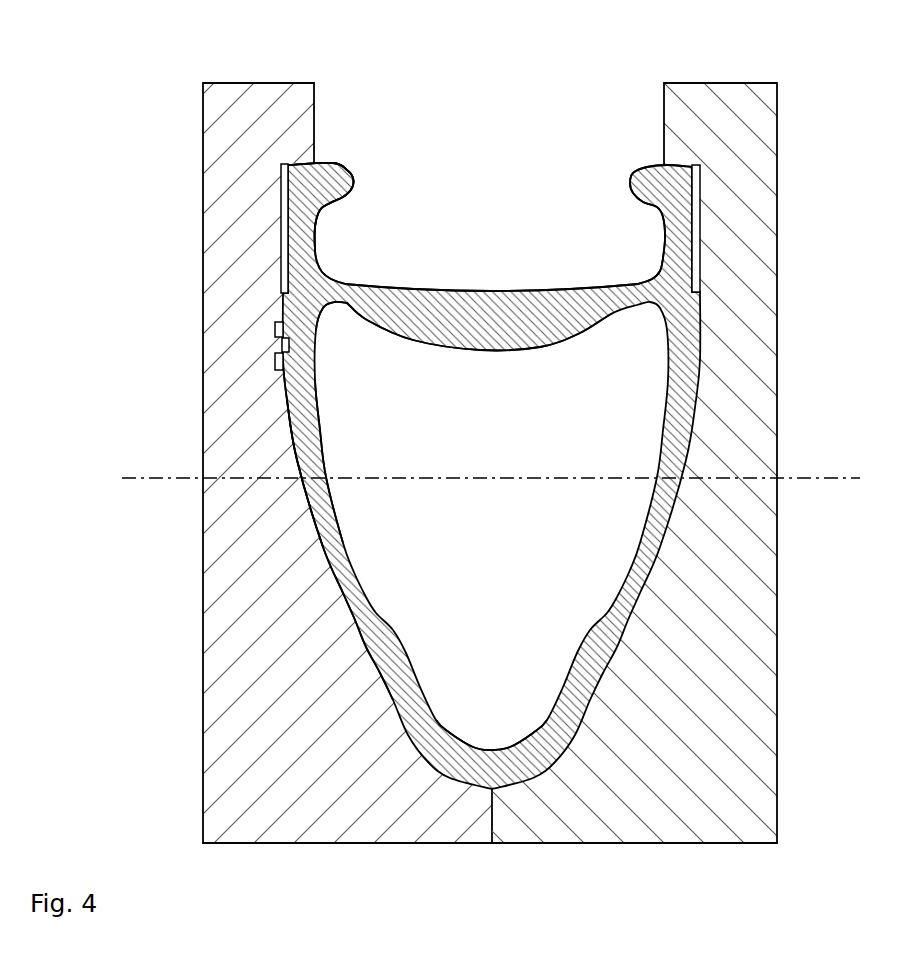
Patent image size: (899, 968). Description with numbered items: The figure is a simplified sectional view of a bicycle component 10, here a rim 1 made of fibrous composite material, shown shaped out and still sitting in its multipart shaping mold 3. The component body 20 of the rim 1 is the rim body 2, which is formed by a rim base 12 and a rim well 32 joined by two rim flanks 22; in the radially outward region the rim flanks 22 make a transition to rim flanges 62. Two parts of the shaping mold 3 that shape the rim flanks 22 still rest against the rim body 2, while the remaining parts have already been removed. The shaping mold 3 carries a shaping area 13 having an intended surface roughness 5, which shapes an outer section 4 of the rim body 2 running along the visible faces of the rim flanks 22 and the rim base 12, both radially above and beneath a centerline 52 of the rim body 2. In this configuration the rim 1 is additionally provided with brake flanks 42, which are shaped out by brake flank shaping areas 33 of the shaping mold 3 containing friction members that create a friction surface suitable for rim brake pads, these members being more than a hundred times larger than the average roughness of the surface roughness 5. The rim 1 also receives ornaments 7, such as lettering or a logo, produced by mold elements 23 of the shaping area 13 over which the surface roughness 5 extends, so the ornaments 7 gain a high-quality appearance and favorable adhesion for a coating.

The bicycle component 10 is at (403, 421).
The shaping mold 3 is at (202, 127).
The rim body 2 is at (302, 185).
The brake flanks 42 is at (281, 268).
The ornaments 7 is at (275, 334).
The outer section 4 is at (287, 412).
The centerline 52 is at (148, 477).
The rim flanks 22 is at (333, 580).
The rim base 12 is at (491, 776).
The rim 1 is at (304, 158).
The component body 20 is at (322, 158).
The brake flank shaping areas 33 is at (317, 245).
The mold elements 23 is at (335, 301).
The rim well 32 is at (507, 313).
The rim flanges 62 is at (662, 178).
The shaping area 13 is at (297, 442).
The surface roughness 5 is at (303, 470).